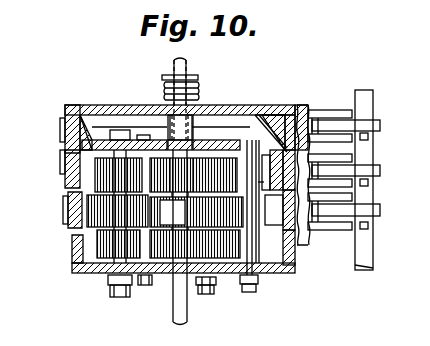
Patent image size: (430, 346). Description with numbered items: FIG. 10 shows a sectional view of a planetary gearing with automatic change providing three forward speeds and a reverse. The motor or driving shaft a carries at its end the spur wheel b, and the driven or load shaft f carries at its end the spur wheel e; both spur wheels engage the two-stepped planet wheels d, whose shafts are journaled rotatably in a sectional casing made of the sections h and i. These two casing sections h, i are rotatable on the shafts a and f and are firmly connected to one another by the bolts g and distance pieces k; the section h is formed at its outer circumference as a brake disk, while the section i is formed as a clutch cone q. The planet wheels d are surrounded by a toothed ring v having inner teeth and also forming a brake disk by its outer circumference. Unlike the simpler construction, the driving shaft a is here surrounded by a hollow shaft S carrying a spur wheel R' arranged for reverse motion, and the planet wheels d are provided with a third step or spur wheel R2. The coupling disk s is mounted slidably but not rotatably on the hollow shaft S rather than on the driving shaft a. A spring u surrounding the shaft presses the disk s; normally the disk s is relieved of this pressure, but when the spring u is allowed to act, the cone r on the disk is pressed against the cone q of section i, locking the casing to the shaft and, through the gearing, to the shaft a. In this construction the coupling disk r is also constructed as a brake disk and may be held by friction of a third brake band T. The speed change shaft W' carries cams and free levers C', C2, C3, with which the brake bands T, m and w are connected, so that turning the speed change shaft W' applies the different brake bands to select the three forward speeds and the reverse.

The motor shaft a is at (188, 68).
The spring u is at (163, 92).
The clutch cone q is at (88, 122).
The third brake band T is at (62, 131).
The spur wheel for reverse motion R' is at (258, 107).
The coupling disk s is at (248, 111).
The coupling disk cone r is at (290, 108).
The hollow shaft S is at (197, 104).
The speed change shaft W' is at (377, 176).
The free lever C' is at (354, 126).
The free lever C2 is at (380, 171).
The free lever C3 is at (381, 210).
The third step spur wheel R2 is at (92, 171).
The brake band m is at (64, 176).
The two-stepped planet wheel d is at (98, 208).
The brake band w is at (66, 218).
The distance piece k is at (272, 170).
The casing section i is at (262, 182).
The toothed ring v is at (292, 226).
The casing section h is at (292, 263).
The bolt g is at (254, 276).
The spur wheel e is at (198, 278).
The driven shaft f is at (173, 239).
The spur wheel b is at (170, 255).